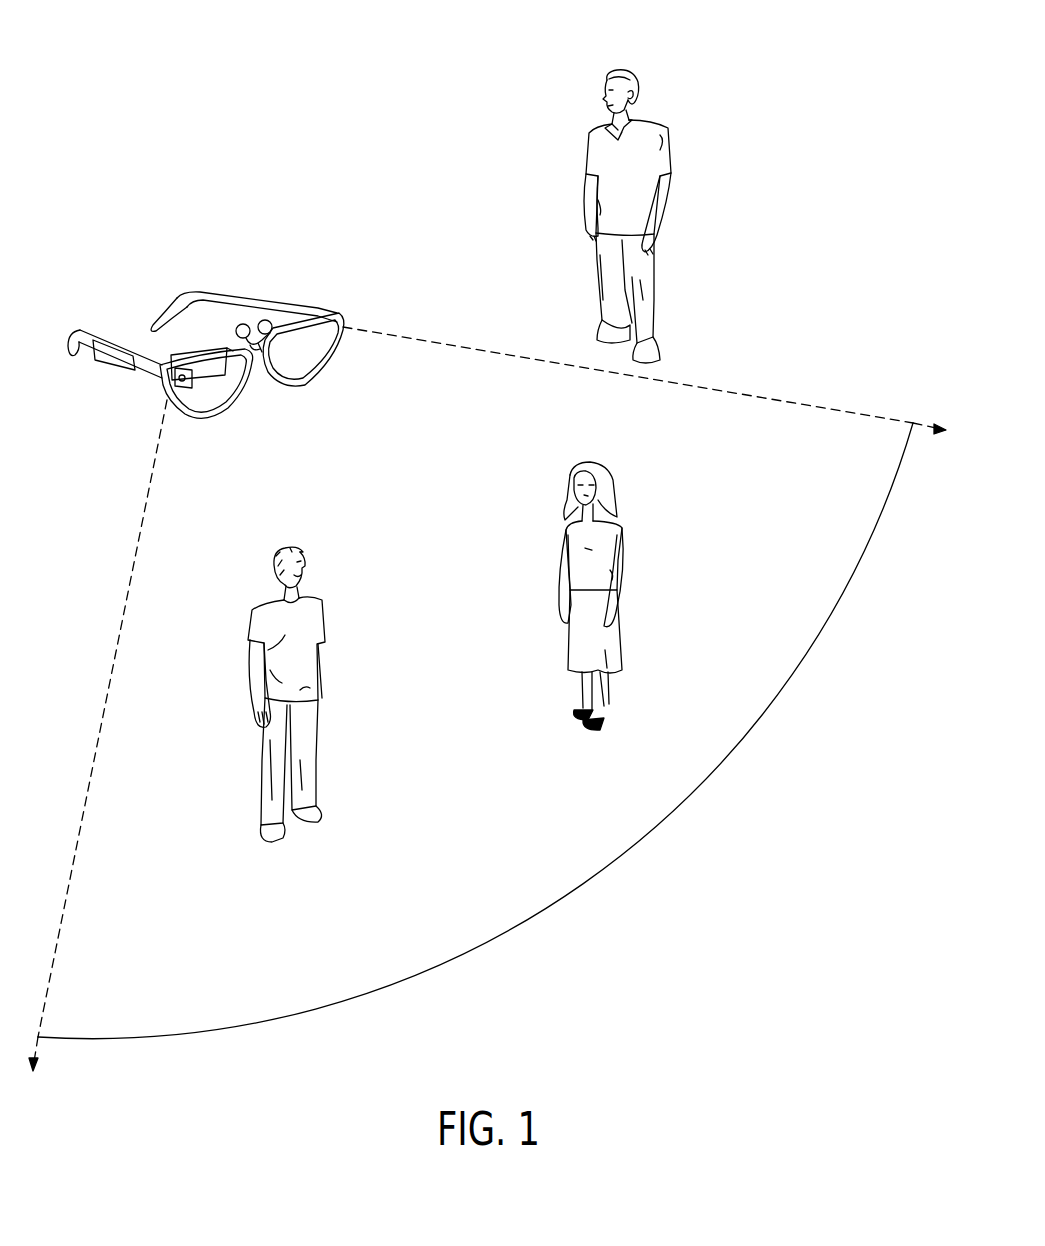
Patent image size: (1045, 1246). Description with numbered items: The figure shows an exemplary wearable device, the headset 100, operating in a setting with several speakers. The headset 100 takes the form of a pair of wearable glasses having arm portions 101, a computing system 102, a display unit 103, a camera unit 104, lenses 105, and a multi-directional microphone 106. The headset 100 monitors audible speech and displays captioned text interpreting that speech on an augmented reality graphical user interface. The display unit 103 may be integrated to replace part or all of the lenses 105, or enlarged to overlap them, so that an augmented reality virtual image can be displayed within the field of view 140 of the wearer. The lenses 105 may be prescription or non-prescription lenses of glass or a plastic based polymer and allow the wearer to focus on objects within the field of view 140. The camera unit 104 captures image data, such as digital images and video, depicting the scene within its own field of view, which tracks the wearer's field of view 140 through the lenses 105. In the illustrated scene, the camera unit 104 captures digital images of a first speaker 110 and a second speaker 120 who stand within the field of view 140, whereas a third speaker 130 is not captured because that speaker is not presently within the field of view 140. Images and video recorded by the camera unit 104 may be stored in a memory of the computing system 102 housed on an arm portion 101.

The headset 100 is at (330, 279).
The arm portions 101 is at (78, 324).
The computing system 102 is at (113, 355).
The display unit 103 is at (207, 364).
The camera unit 104 is at (197, 420).
The lenses 105 is at (232, 382).
The multi-directional microphone 106 is at (247, 333).
The first speaker 110 is at (295, 545).
The second speaker 120 is at (598, 460).
The third speaker 130 is at (618, 72).
The field of view 140 is at (498, 930).